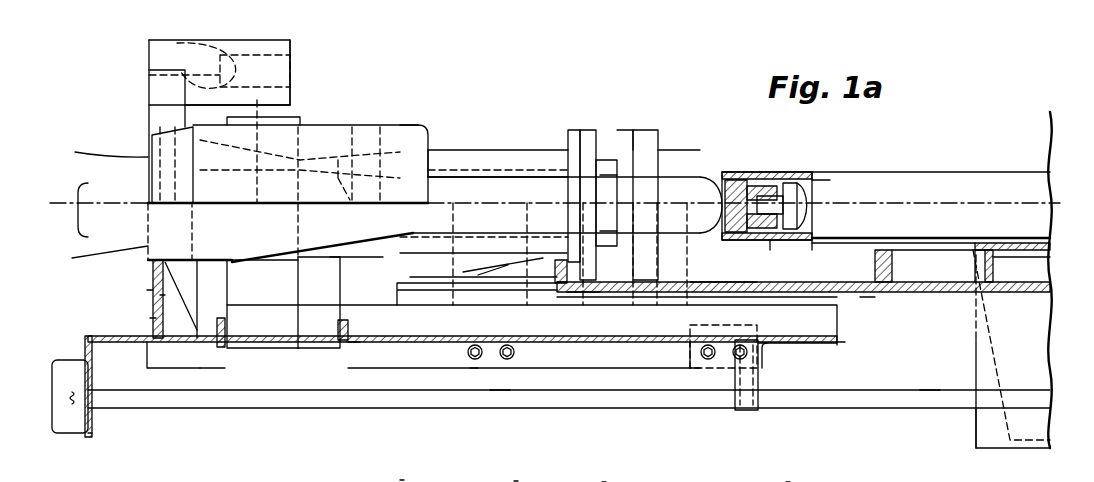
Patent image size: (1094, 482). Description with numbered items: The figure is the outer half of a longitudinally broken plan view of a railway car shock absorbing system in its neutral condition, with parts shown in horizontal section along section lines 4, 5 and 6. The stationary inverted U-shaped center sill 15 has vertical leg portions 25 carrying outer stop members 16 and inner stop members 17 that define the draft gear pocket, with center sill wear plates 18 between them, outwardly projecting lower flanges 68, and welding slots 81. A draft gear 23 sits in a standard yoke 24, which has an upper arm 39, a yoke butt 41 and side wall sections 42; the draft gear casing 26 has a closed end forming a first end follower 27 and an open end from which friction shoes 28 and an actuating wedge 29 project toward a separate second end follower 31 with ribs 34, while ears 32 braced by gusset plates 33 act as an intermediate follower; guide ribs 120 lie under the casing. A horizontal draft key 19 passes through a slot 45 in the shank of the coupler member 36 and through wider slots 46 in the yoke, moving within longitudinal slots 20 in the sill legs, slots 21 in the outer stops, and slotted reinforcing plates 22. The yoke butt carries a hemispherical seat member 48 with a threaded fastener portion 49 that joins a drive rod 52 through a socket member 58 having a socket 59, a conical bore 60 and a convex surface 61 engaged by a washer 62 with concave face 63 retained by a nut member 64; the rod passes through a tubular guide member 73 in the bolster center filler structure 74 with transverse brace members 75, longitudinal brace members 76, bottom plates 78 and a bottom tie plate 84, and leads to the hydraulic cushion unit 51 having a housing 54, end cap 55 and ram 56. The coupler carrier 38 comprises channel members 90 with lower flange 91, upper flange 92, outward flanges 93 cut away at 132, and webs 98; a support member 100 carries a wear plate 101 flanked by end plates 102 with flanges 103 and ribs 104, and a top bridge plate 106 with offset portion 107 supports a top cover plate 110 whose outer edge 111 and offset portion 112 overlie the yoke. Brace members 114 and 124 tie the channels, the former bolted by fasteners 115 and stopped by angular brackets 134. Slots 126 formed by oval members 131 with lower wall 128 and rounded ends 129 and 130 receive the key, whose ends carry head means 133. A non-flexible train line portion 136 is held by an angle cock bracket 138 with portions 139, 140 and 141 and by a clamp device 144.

The section line 4- 4 is at (59, 196).
The section line 5- 5 is at (70, 312).
The section line 6- 6 is at (277, 180).
The center sill 15 is at (856, 342).
The outer stop members 16 is at (470, 263).
The inner stop members 17 is at (875, 268).
The center sill wear plates 18 is at (695, 282).
The draft key 19 is at (299, 286).
The longitudinal slots 20 is at (570, 288).
The longitudinal slots 21 is at (522, 300).
The reinforcing plates 22 is at (590, 292).
The draft gear 23 is at (476, 149).
The yoke 24 is at (514, 197).
The vertical leg portions 25 is at (868, 294).
The casing 26 is at (460, 150).
The first integral end follower 27 is at (335, 175).
The friction shoes 28 is at (605, 160).
The actuating wedge 29 is at (607, 160).
The second end follower 31 is at (658, 135).
The transverse flanges or ears 32 is at (570, 130).
The gusset plates 33 is at (586, 130).
The ribs 34 is at (635, 130).
The coupler member 36 is at (118, 242).
The coupler carrier 38 is at (199, 375).
The upper arm 39 is at (445, 150).
The yoke butt 41 is at (702, 178).
The side wall sections 42 is at (190, 100).
The slot 45 is at (195, 180).
The slots 46 is at (295, 140).
The hemispherical seat member 48 is at (724, 185).
The threaded fastener portion 49 is at (800, 183).
The hydraulic cushion unit 51 is at (515, 481).
The drive rod 52 is at (885, 172).
The housing 54 is at (603, 481).
The end cap configuration 55 is at (790, 477).
The ram 56 is at (401, 472).
The socket member 58 is at (758, 186).
The hemispherical socket 59 is at (730, 178).
The conical bore 60 is at (782, 183).
The convex spherical surface 61 is at (776, 250).
The washer 62 is at (786, 242).
The concave spherical face 63 is at (792, 180).
The nut member 64 is at (820, 180).
The lower flanges 68 is at (930, 335).
The tubular guide member 73 is at (1003, 252).
The bolster center filler structure 74 is at (1058, 260).
The transverse web or brace members 75 is at (983, 265).
The longitudinal brace members 76 is at (920, 278).
The bottom plates 78 is at (980, 428).
The elongated slots 81 is at (888, 292).
The bottom tie plate 84 is at (990, 292).
The channel members 90 is at (170, 68).
The inwardly directed flange portion 91 is at (366, 340).
The inwardly turned flange portion 92 is at (290, 98).
The outwardly directed flange portions 93 is at (295, 45).
The vertical web portions 98 is at (185, 105).
The coupler carrier support member 100 is at (215, 350).
The wear plate 101 is at (150, 265).
The end plates 102 is at (160, 295).
The inwardly turned flanges 103 is at (145, 290).
The strengthening ribs 104 is at (150, 318).
The top bridge plate 106 is at (140, 108).
The upwardly offset portion 107 is at (148, 178).
The top cover plate 110 is at (382, 116).
The outer edge portion 111 is at (162, 150).
The upwardly offset portion 112 is at (398, 137).
The brace member 114 is at (470, 368).
The nut-and-bolt fasteners 115 is at (500, 358).
The guide ribs 120 is at (512, 152).
The brace member 124 is at (683, 360).
The rounded-end slots 126 is at (250, 55).
The lower wall portion 128 is at (318, 345).
The rounded end portion 129 is at (346, 340).
The rounded end portion 130 is at (192, 54).
The flattened oval member 131 is at (300, 53).
The cut away 132 is at (772, 345).
The head means 133 is at (295, 350).
The angular brackets 134 is at (405, 342).
The non-flexible outer end train line portion 136 is at (500, 400).
The angle cock bracket 138 is at (70, 439).
The longitudinally extending portion 139 is at (160, 337).
The transverse portion 140 is at (95, 378).
The horizontally disposed portion 141 is at (62, 385).
The clamp device 144 is at (760, 385).